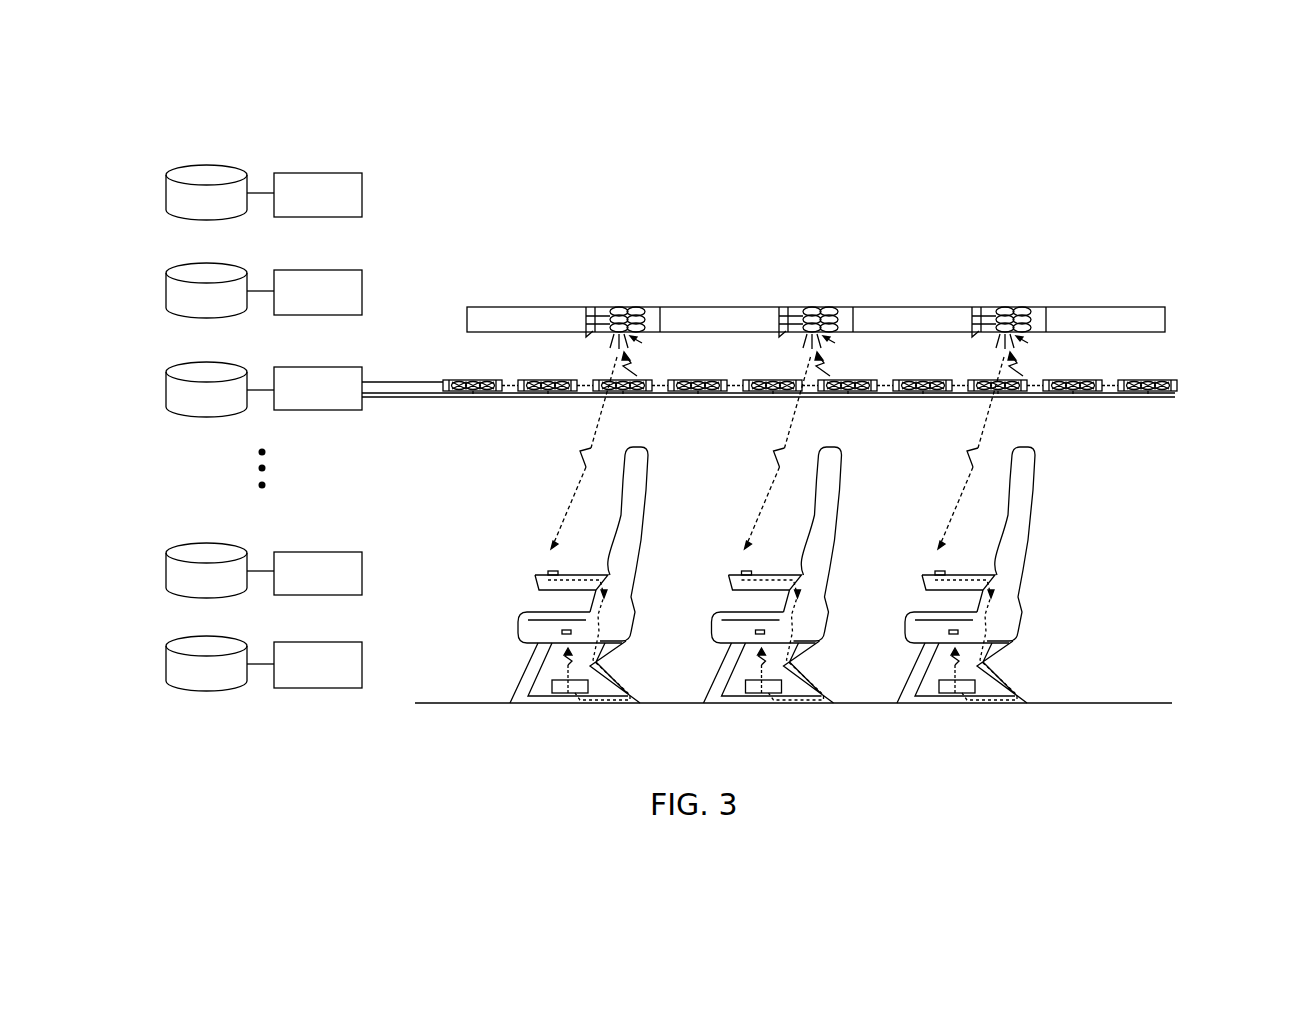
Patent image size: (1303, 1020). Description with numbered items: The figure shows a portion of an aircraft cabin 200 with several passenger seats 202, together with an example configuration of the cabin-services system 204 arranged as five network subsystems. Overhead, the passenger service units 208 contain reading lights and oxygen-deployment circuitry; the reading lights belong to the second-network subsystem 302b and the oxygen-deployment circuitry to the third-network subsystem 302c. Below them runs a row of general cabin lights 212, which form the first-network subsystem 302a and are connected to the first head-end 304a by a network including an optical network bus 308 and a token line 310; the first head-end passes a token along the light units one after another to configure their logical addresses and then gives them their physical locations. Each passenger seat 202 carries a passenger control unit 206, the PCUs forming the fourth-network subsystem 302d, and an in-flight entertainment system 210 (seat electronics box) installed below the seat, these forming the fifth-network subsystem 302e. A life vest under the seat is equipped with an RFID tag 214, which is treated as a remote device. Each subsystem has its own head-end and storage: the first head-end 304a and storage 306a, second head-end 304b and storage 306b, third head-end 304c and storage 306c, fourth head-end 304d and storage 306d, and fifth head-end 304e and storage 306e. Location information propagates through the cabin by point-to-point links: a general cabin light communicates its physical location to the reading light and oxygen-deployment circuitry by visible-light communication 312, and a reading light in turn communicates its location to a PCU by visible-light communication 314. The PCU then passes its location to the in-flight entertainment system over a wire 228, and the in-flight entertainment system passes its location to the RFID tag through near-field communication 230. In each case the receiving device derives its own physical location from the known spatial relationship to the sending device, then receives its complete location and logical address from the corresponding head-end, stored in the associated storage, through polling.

The cabin 200 is at (1140, 618).
The passenger seat 202 is at (653, 484).
The cabin-services system 204 is at (433, 231).
The passenger control unit 206 is at (553, 572).
The passenger service unit 208 is at (613, 283).
The in-flight entertainment system 210 is at (552, 685).
The general cabin light 212 is at (472, 374).
The RFID tag 214 is at (565, 630).
The wire 228 is at (618, 613).
The near-field communication 230 is at (567, 663).
The first-network subsystem 302a is at (1198, 368).
The second-network subsystem 302b is at (1198, 278).
The third-network subsystem 302c is at (1189, 180).
The fourth-network subsystem 302d is at (1198, 550).
The fifth-network subsystem 302e is at (1198, 645).
The first head-end 304a is at (317, 366).
The second head-end 304b is at (317, 269).
The third head-end 304c is at (317, 172).
The fourth head-end 304d is at (317, 551).
The fifth head-end 304e is at (317, 688).
The first storage 306a is at (207, 362).
The second storage 306b is at (207, 263).
The third storage 306c is at (207, 165).
The fourth storage 306d is at (207, 543).
The fifth storage 306e is at (205, 695).
The optical network bus 308 is at (433, 395).
The token line 310 is at (423, 381).
The visible-light communication 312 is at (637, 368).
The visible-light communication 314 is at (592, 440).